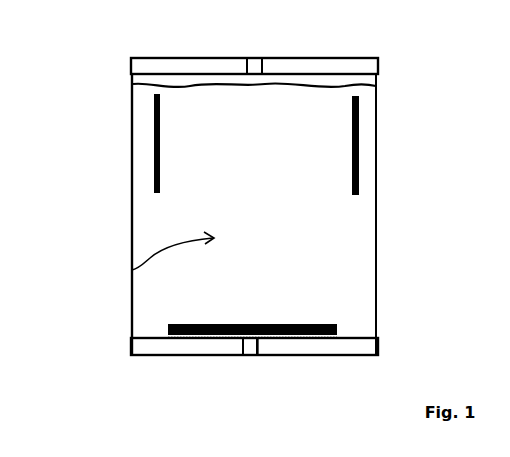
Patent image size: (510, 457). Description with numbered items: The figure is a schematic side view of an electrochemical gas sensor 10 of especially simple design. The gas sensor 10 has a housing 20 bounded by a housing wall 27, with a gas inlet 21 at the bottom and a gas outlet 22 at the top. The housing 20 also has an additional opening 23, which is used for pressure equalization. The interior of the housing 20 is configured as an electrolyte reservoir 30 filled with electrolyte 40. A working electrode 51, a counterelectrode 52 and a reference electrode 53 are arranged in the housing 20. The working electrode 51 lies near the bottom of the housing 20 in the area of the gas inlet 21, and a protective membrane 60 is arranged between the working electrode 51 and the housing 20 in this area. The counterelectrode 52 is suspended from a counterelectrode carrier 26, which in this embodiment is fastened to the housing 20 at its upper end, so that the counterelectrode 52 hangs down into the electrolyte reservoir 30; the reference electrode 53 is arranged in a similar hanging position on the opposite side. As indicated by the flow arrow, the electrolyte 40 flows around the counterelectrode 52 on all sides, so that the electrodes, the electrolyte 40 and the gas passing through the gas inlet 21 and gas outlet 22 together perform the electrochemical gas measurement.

The electrochemical gas sensor 10 is at (49, 47).
The housing 20 is at (132, 212).
The gas inlet 21 is at (253, 356).
The gas outlet 22 is at (254, 57).
The additional opening 23 is at (127, 117).
The counterelectrode carrier 26 is at (158, 93).
The housing wall 27 is at (376, 237).
The electrolyte reservoir 30 is at (132, 297).
The electrolyte 40 is at (132, 270).
The working electrode 51 is at (337, 329).
The counterelectrode 52 is at (133, 147).
The reference electrode 53 is at (355, 145).
The protective membrane 60 is at (258, 356).